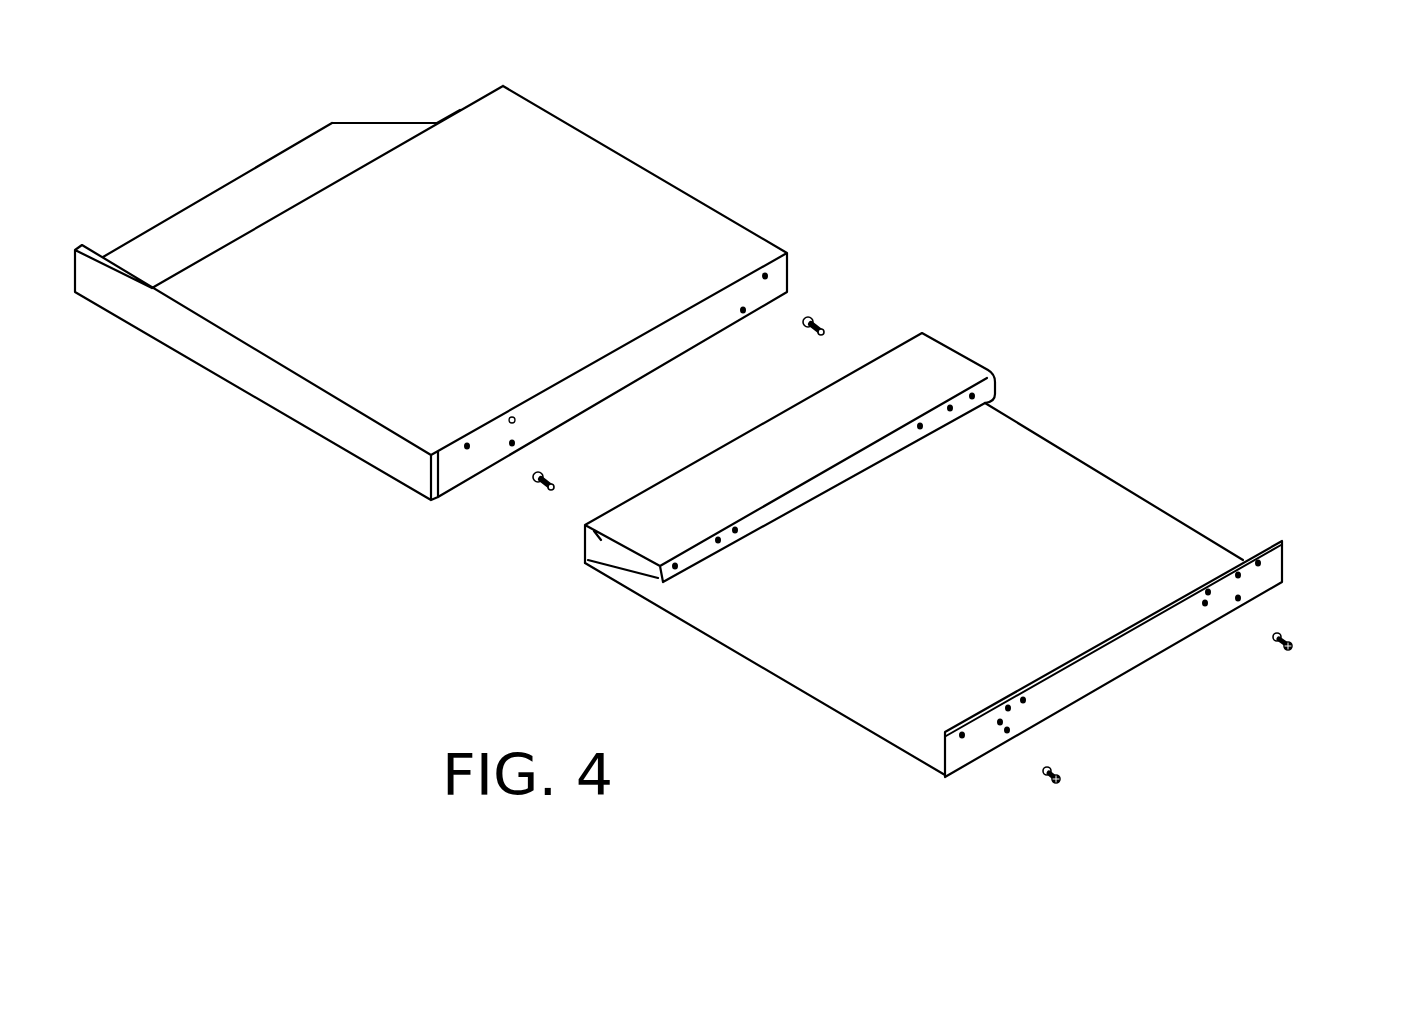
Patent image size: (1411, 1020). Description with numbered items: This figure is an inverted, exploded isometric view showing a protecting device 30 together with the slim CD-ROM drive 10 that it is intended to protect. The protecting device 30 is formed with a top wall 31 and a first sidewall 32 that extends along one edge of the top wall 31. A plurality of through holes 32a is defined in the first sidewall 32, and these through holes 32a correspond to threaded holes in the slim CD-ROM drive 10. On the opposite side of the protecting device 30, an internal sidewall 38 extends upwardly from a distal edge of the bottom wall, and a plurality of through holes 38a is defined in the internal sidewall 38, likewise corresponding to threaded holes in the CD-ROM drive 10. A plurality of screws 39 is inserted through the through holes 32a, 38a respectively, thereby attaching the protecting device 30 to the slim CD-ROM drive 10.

The slim CD-ROM drive 10 is at (610, 167).
The protecting device 30 is at (982, 555).
The top wall 31 is at (1098, 505).
The first sidewall 32 is at (1162, 659).
The through holes 32a is at (1242, 576).
The internal sidewall 38 is at (849, 457).
The through holes 38a is at (975, 397).
The screws 39 is at (1294, 646).